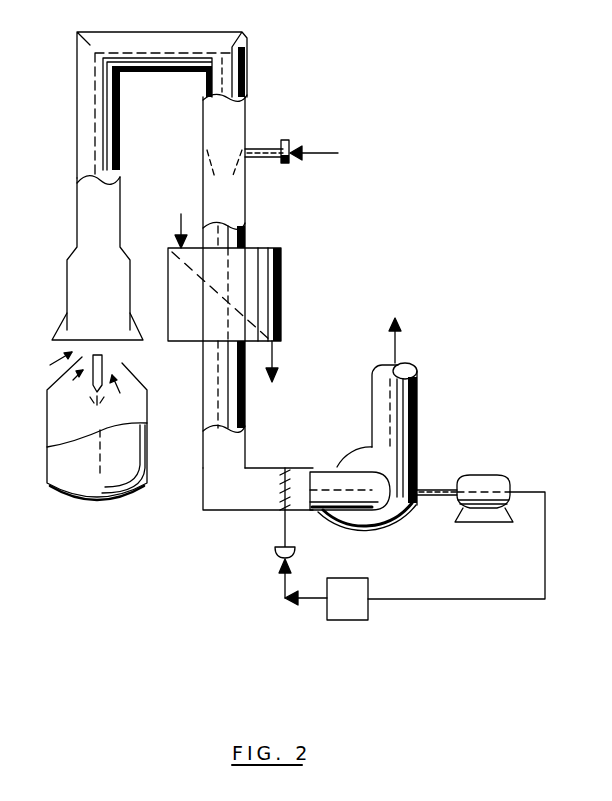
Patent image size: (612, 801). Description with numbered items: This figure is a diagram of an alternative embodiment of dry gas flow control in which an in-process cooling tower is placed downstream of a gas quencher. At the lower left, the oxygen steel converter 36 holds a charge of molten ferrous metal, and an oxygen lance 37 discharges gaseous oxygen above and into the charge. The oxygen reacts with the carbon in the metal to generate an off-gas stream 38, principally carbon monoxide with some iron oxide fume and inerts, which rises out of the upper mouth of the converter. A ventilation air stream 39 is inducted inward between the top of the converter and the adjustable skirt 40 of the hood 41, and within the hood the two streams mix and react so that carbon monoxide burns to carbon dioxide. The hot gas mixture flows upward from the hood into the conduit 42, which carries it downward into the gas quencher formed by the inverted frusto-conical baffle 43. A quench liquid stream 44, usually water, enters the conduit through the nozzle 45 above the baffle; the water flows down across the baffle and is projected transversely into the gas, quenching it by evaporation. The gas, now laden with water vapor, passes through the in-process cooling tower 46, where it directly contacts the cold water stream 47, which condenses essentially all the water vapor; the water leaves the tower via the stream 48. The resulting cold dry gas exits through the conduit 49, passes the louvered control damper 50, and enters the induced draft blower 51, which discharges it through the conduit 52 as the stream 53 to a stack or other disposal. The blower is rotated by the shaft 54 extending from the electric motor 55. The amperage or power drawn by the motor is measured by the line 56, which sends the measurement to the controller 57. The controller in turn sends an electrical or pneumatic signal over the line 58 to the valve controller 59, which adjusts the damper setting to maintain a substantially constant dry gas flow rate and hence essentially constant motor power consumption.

The oxygen steel converter 36 is at (147, 455).
The oxygen lance 37 is at (103, 366).
The off-gas stream 38 is at (118, 379).
The ventilation air stream 39 is at (145, 365).
The adjustable skirt 40 is at (132, 325).
The hood 41 is at (132, 265).
The conduit 42 is at (203, 92).
The inverted frusto-conical baffle 43 is at (247, 177).
The quench liquid stream 44 is at (325, 148).
The nozzle 45 is at (265, 148).
The in-process cooling tower 46 is at (283, 265).
The cold water stream 47 is at (181, 214).
The cold water removal stream 48 is at (274, 348).
The conduit 49 is at (245, 412).
The louvered control damper 50 is at (290, 468).
The induced draft fan or blower 51 is at (407, 528).
The conduit 52 is at (417, 422).
The discharge gas stream 53 is at (397, 355).
The shaft 54 is at (447, 490).
The electric motor 55 is at (510, 480).
The measurement line 56 is at (545, 540).
The controller 57 is at (369, 616).
The signal line 58 is at (282, 584).
The valve controller 59 is at (272, 549).